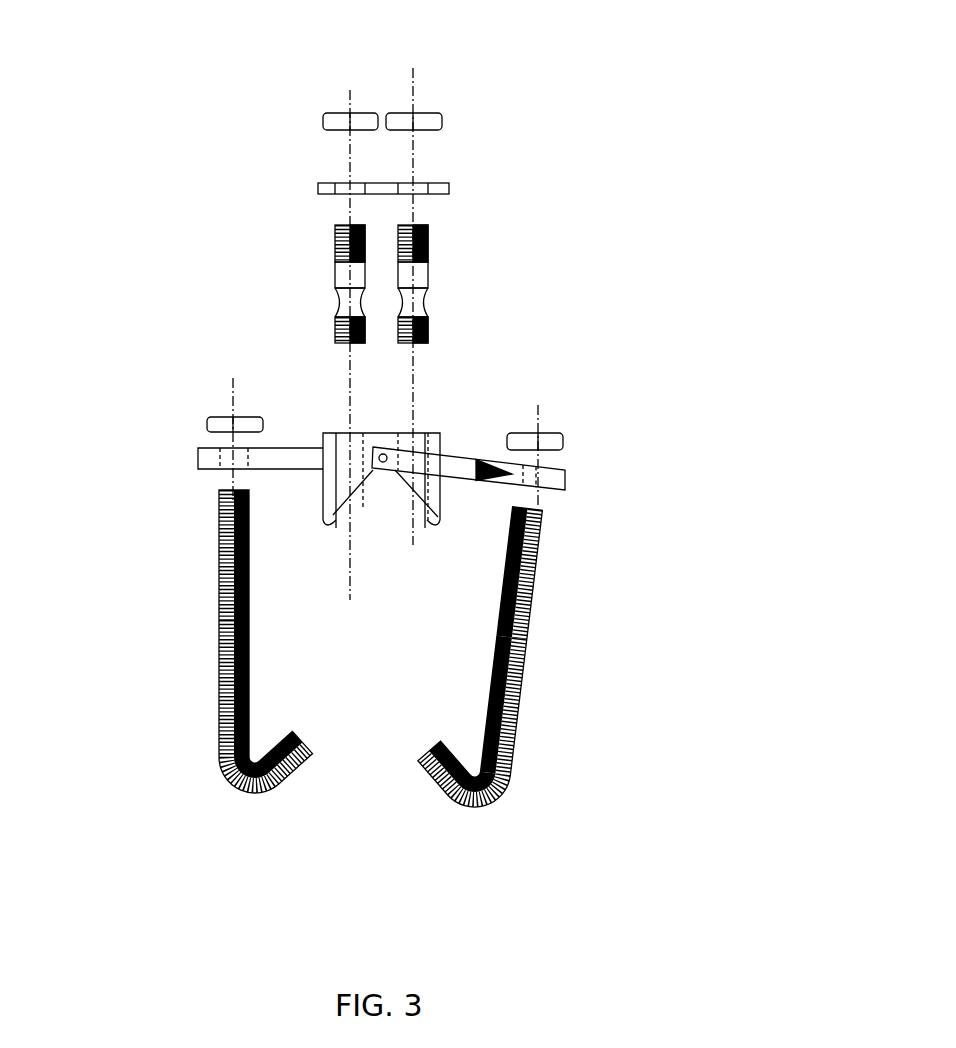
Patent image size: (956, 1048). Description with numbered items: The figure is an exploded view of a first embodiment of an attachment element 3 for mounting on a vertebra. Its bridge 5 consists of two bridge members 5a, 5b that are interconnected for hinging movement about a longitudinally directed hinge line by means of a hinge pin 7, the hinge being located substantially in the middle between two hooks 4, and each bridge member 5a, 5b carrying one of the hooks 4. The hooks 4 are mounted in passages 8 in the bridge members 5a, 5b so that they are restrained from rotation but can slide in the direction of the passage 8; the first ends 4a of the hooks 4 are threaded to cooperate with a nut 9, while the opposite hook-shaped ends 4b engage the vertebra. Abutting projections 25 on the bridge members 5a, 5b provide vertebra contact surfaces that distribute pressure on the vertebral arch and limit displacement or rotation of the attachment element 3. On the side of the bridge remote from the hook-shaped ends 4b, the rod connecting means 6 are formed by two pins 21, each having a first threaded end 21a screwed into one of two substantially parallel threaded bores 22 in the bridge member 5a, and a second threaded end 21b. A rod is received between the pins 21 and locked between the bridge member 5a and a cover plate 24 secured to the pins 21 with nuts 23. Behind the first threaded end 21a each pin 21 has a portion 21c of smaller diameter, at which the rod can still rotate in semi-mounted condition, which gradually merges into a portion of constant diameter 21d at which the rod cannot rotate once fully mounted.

The attachment element 3 is at (440, 424).
The hooks 4 is at (377, 666).
The first ends of the hooks 4a is at (219, 508).
The hook-shaped ends of the hooks 4b is at (428, 763).
The bridge 5 is at (376, 462).
The bridge member 5a is at (307, 457).
The bridge member 5b is at (468, 427).
The rod connecting means 6 is at (408, 174).
The hinge pin 7 is at (384, 454).
The passages 8 is at (228, 458).
The nut 9 is at (215, 423).
The pins 21 is at (376, 272).
The first threaded end of the pin 21a is at (473, 325).
The second threaded end of the pin 21b is at (474, 232).
The portion of smaller diameter 21c is at (473, 290).
The portion of constant diameter 21d is at (284, 266).
The threaded bores 22 is at (353, 448).
The nuts 23 is at (400, 118).
The cover plate 24 is at (448, 184).
The abutting projections 25 is at (440, 518).